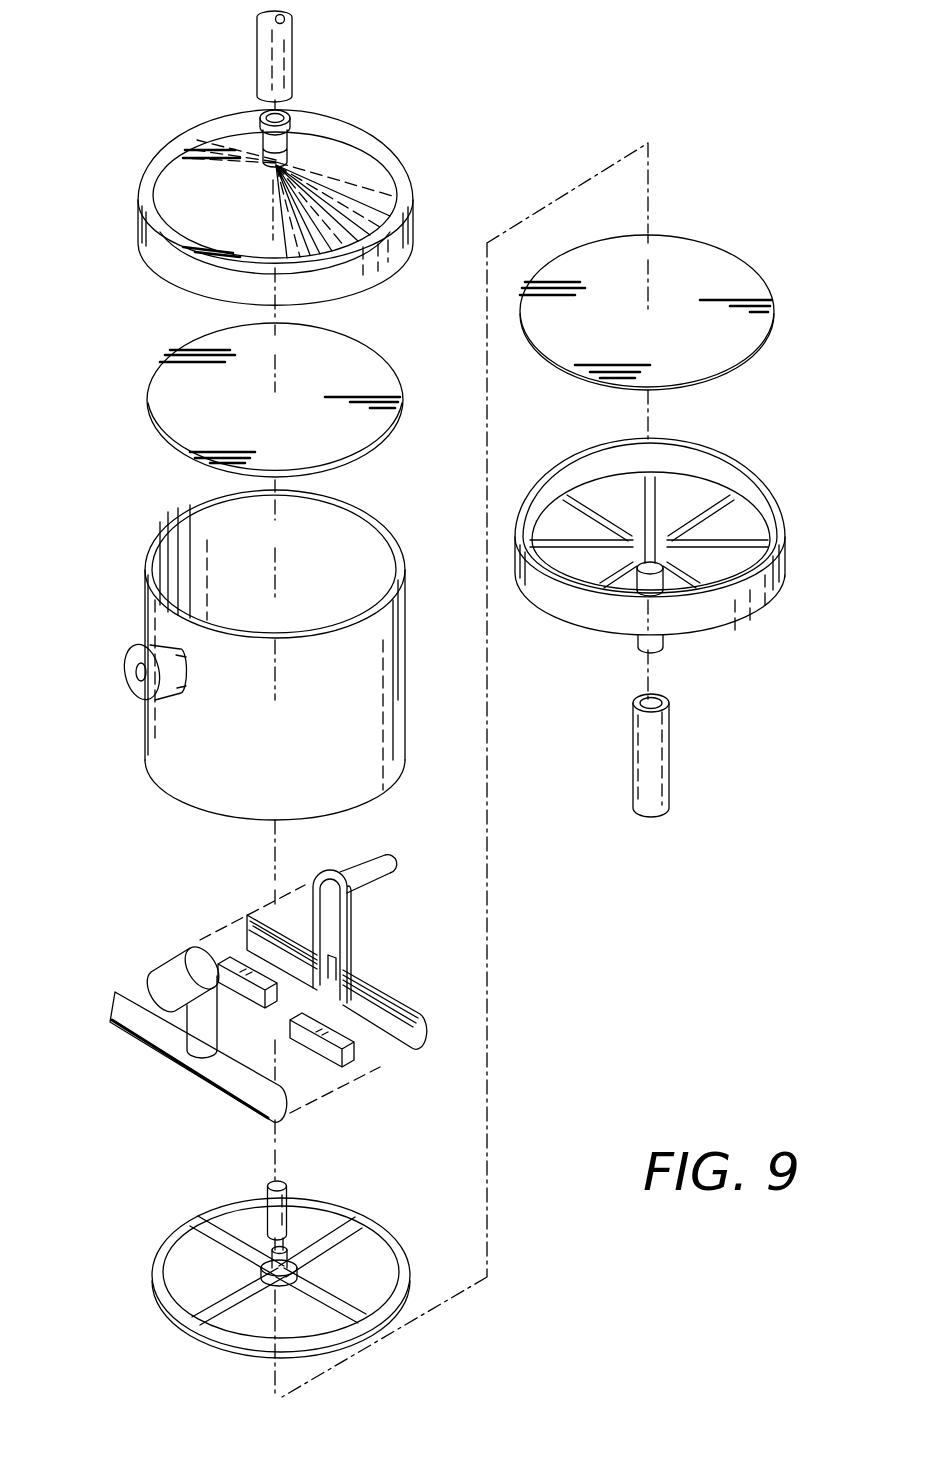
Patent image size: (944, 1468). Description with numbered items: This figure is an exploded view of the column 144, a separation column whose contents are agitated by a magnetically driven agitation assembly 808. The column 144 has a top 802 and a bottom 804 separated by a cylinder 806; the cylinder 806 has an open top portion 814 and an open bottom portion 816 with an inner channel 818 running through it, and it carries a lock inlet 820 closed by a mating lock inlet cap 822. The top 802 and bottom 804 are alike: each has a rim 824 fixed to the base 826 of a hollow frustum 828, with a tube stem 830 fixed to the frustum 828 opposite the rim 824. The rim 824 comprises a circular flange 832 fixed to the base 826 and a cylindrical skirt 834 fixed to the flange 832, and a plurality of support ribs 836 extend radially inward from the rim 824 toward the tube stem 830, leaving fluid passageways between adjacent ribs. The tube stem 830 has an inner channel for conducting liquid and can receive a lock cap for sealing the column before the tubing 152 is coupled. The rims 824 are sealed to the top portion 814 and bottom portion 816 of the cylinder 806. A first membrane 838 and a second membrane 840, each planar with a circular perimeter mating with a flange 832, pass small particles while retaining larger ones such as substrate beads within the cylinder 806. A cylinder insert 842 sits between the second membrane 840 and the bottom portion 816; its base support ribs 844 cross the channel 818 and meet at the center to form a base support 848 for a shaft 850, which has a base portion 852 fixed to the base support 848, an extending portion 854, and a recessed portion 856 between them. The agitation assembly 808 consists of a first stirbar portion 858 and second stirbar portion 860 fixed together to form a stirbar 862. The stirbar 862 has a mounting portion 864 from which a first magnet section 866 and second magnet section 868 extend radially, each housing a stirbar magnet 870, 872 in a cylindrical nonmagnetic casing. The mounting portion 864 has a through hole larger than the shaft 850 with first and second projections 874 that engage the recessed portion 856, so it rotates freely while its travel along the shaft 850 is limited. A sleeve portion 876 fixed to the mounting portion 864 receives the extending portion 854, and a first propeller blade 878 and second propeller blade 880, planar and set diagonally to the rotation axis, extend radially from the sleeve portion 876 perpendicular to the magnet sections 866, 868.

The column 144 is at (457, 698).
The tubing 152 is at (292, 30).
The top 802 is at (280, 176).
The bottom 804 is at (660, 534).
The cylinder 806 is at (262, 668).
The agitation assembly 808 is at (315, 971).
The top portion 814 is at (147, 590).
The bottom portion 816 is at (182, 790).
The inner channel 818 is at (298, 573).
The lock inlet 820 is at (127, 671).
The lock inlet cap 822 is at (138, 683).
The rim 824 is at (473, 326).
The base 826 is at (155, 205).
The hollow frustum 828 is at (208, 150).
The tube stem 830 is at (295, 140).
The flange 832 is at (405, 205).
The skirt 834 is at (397, 248).
The support ribs 836 is at (705, 510).
The first membrane 838 is at (186, 352).
The second membrane 840 is at (732, 248).
The cylinder insert 842 is at (300, 1246).
The base support ribs 844 is at (355, 1235).
The base support 848 is at (297, 1267).
The shaft 850 is at (271, 1207).
The base portion 852 is at (268, 1267).
The extending portion 854 is at (268, 1195).
The recessed portion 856 is at (205, 1208).
The first stirbar portion 858 is at (172, 1073).
The second stirbar portion 860 is at (422, 1022).
The stirbar 862 is at (394, 908).
The mounting portion 864 is at (187, 1070).
The first magnet section 866 is at (112, 993).
The second magnet section 868 is at (252, 1088).
The stirbar magnet 870 is at (222, 964).
The stirbar magnet 872 is at (345, 1058).
The first and second projections 874 is at (333, 952).
The sleeve portion 876 is at (350, 918).
The first propeller blade 878 is at (195, 1010).
The second propeller blade 880 is at (390, 866).